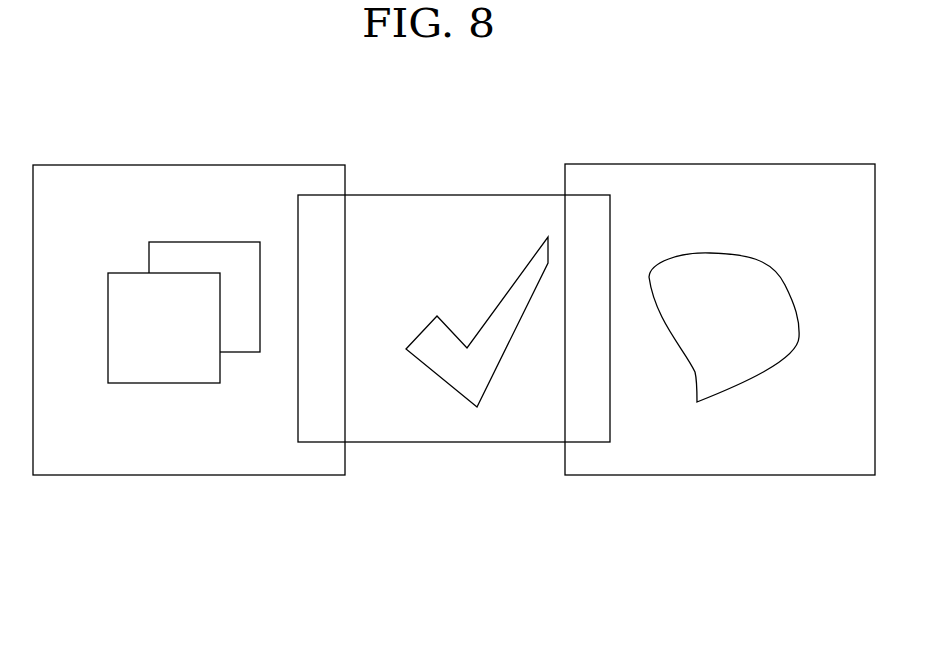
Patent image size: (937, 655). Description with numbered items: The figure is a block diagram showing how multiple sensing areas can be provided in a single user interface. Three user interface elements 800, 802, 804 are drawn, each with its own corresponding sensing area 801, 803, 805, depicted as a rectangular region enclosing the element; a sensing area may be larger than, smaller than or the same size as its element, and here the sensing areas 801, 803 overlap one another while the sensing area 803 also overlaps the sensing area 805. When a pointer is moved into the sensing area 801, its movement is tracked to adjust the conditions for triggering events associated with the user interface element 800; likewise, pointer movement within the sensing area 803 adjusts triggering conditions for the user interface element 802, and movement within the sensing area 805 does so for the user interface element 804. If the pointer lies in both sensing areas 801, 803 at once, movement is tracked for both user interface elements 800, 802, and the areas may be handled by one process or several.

The user interface element 800 is at (108, 383).
The sensing area 801 is at (112, 165).
The user interface element 802 is at (450, 387).
The sensing area 803 is at (408, 195).
The user interface element 804 is at (695, 372).
The sensing area 805 is at (770, 164).